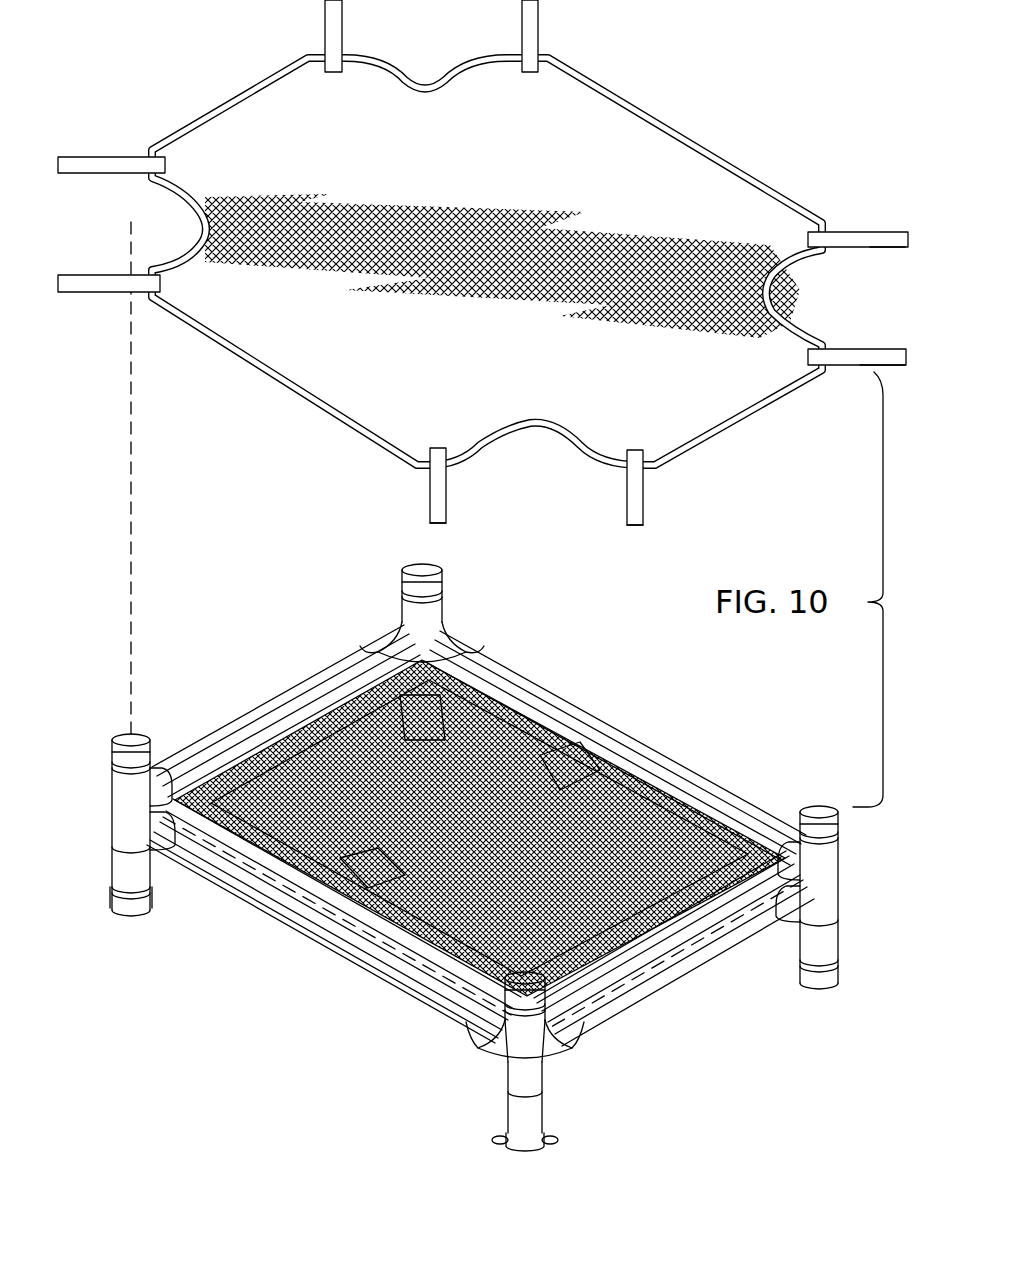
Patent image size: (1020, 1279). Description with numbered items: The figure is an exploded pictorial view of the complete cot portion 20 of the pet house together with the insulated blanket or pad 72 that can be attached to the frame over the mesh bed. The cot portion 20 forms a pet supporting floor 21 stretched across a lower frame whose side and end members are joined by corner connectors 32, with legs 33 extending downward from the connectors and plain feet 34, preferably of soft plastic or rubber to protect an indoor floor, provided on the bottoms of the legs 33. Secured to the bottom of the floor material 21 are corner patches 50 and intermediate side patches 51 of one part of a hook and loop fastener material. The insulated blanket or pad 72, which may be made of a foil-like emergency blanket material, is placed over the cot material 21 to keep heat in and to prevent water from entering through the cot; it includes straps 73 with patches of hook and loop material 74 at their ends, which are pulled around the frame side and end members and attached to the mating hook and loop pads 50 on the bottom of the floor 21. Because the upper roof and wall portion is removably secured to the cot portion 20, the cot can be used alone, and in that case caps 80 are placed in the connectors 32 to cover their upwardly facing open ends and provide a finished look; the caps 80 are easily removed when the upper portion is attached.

The cot portion 20 is at (471, 857).
The pet supporting floor 21 is at (258, 893).
The corner connector 32 is at (110, 790).
The leg 33 is at (112, 868).
The plain foot 34 is at (112, 897).
The corner patch 50 is at (466, 660).
The intermediate side patch 51 is at (586, 750).
The insulated blanket or pad 72 is at (688, 160).
The strap 73 is at (888, 190).
The patch of hook and loop material 74 is at (880, 250).
The cap 80 is at (120, 743).